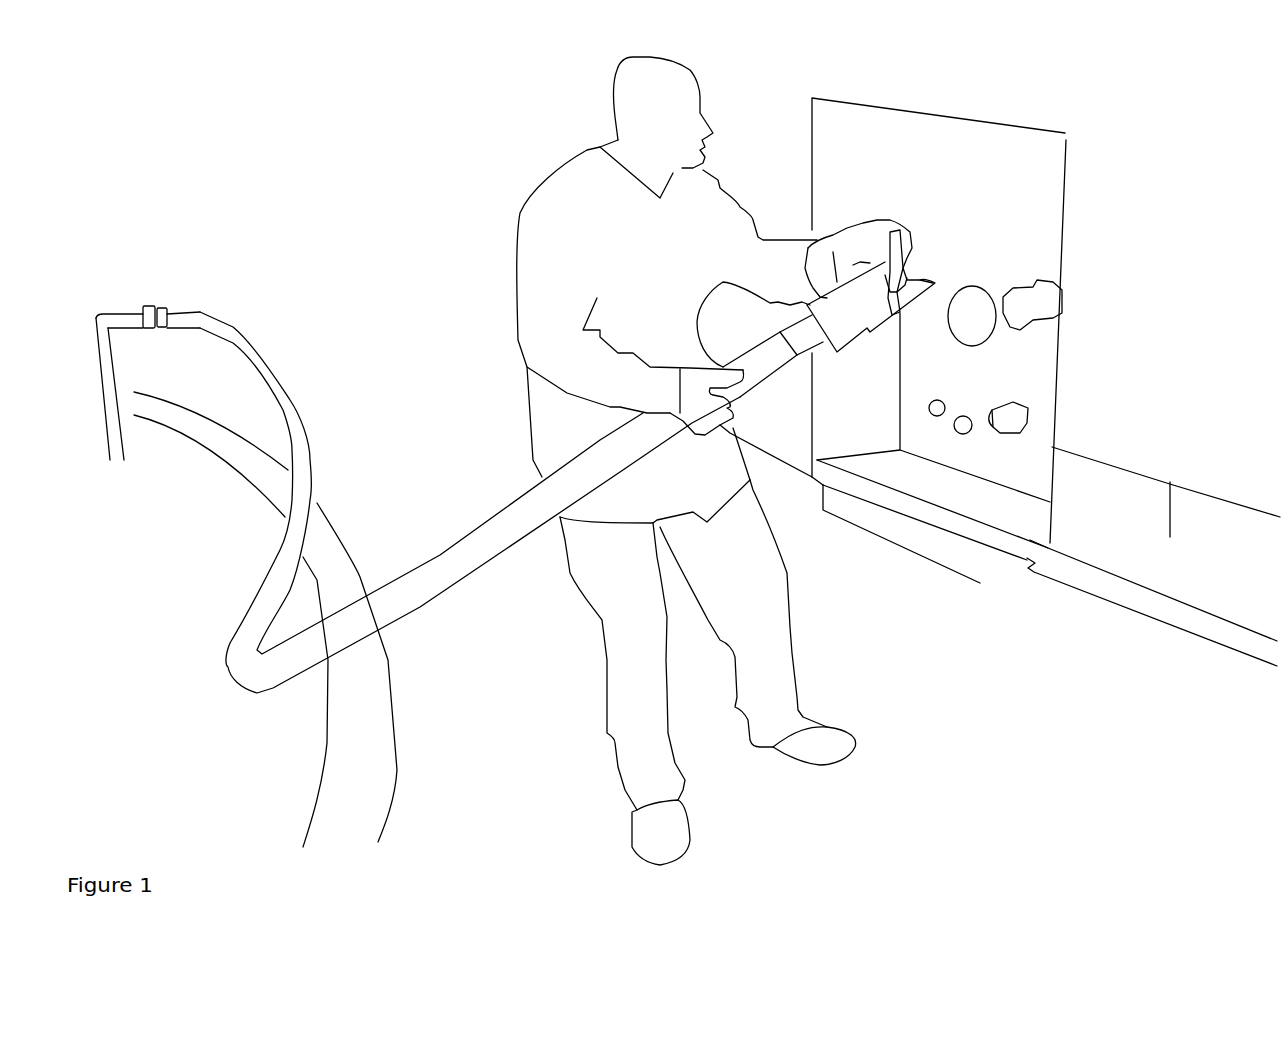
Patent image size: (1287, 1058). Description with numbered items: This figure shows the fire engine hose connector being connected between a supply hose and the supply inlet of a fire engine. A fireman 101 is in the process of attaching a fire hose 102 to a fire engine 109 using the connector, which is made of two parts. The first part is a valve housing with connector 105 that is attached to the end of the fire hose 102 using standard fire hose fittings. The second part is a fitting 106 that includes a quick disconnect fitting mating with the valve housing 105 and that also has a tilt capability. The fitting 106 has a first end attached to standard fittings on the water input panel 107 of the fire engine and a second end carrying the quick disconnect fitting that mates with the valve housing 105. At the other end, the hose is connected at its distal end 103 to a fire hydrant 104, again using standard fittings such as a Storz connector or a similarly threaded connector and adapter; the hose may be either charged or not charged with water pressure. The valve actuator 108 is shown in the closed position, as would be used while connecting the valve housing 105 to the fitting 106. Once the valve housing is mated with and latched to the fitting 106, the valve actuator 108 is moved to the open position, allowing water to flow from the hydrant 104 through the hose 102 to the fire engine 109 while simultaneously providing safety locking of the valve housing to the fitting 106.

The fireman 101 is at (497, 262).
The fire hose 102 is at (318, 422).
The distal end 103 is at (162, 290).
The fire hydrant 104 is at (93, 315).
The valve housing with connector 105 is at (862, 352).
The fitting 106 is at (1013, 445).
The water input panel 107 is at (957, 237).
The valve actuator 108 is at (894, 233).
The fire engine 109 is at (1137, 527).